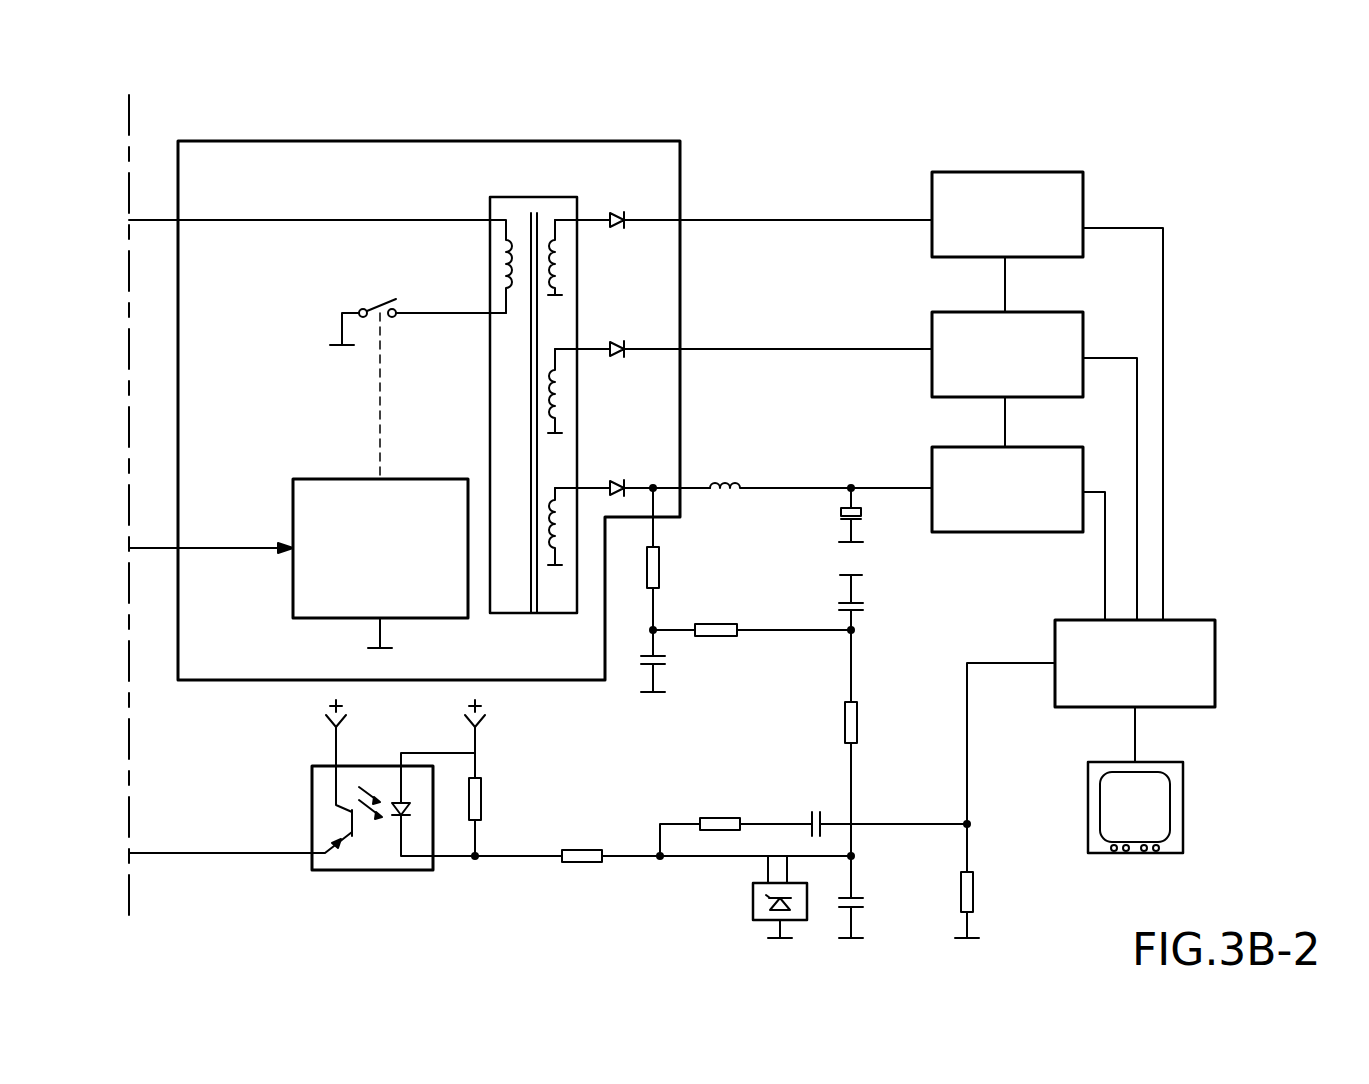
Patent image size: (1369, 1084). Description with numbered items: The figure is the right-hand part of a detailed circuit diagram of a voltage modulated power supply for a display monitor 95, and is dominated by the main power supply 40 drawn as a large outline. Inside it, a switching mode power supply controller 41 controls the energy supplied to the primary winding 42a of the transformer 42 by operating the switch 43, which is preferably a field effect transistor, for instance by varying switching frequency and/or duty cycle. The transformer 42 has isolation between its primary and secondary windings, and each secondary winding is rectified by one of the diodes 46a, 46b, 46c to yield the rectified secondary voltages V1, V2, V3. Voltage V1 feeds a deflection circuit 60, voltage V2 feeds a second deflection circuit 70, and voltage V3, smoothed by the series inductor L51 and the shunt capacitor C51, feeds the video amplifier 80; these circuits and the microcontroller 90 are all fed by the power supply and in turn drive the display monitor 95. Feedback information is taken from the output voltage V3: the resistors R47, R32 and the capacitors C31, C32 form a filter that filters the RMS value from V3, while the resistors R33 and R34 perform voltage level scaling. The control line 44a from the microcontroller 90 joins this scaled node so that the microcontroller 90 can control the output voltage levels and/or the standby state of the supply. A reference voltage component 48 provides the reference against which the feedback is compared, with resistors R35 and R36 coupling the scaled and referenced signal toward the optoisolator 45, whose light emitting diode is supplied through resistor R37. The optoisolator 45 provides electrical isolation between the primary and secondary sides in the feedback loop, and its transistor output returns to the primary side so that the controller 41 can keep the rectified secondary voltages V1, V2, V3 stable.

The main power supply 40 is at (681, 192).
The switching mode power supply controller 41 is at (328, 479).
The transformer 42 is at (538, 180).
The primary winding 42a is at (503, 260).
The switch 43 is at (365, 309).
The standby state control line 44a is at (968, 772).
The optoisolator 45 is at (360, 872).
The diode 46a is at (612, 226).
The diode 46b is at (612, 355).
The diode 46c is at (611, 483).
The reference voltage component 48 is at (753, 909).
The deflection circuit 60 is at (1085, 203).
The deflection circuit 70 is at (932, 333).
The video amplifier 80 is at (932, 456).
The microcontroller 90 is at (1216, 663).
The display monitor 95 is at (1163, 792).
The inductor L51 is at (818, 470).
The capacitor C51 is at (876, 513).
The capacitor C31 is at (677, 659).
The capacitor C32 is at (880, 604).
The resistor R47 is at (682, 557).
The resistor R32 is at (752, 615).
The resistor R33 is at (878, 784).
The resistor R34 is at (997, 892).
The resistor R35 is at (812, 823).
The resistor R36 is at (585, 839).
The resistor R37 is at (502, 779).
The rectified secondary voltage V1 is at (760, 222).
The rectified secondary voltage V2 is at (760, 351).
The rectified secondary voltage V3 is at (760, 490).